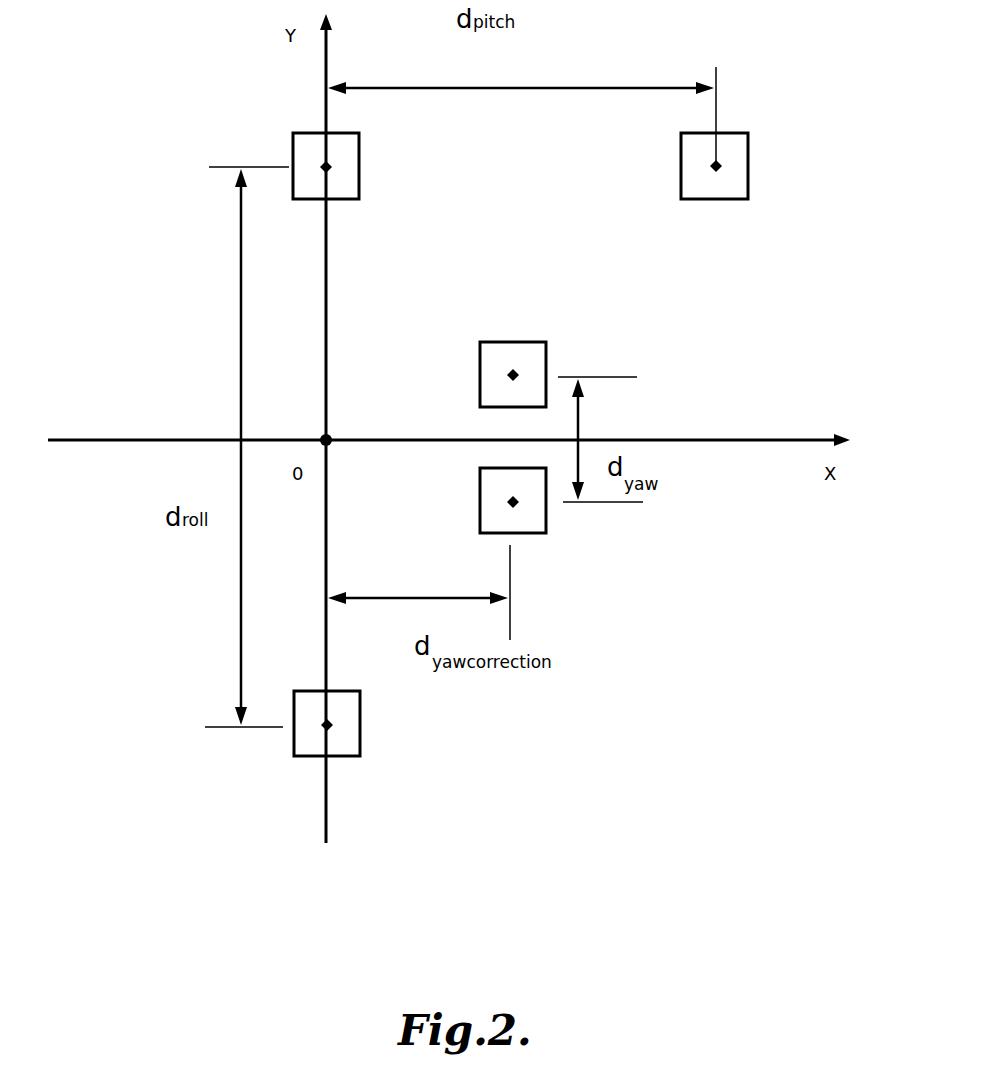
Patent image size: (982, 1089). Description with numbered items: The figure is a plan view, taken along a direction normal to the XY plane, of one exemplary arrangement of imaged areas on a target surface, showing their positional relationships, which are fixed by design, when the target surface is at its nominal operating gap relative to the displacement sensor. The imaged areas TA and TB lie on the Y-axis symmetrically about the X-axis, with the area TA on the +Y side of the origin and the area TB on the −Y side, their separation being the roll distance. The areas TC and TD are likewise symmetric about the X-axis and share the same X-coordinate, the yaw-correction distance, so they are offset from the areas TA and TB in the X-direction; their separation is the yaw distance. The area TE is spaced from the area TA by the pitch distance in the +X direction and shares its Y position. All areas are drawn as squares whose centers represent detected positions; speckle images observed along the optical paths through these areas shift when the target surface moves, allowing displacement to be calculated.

The imaged area TA is at (345, 200).
The imaged area TB is at (355, 757).
The imaged area TC is at (508, 341).
The imaged area TD is at (540, 535).
The imaged area TE is at (736, 200).